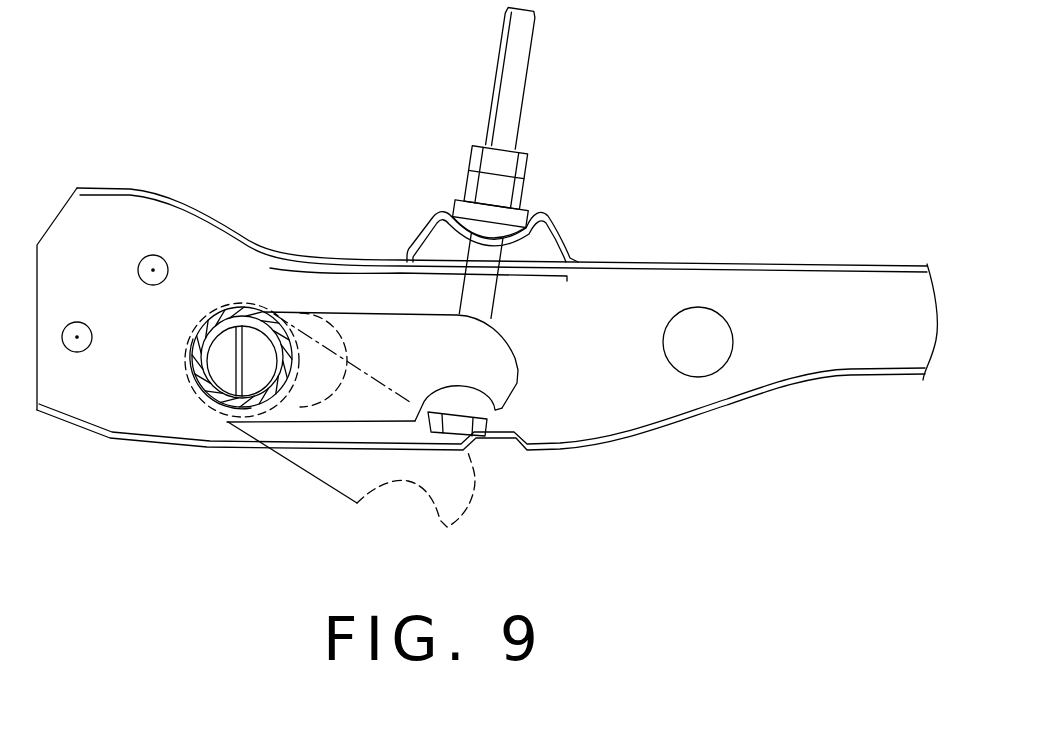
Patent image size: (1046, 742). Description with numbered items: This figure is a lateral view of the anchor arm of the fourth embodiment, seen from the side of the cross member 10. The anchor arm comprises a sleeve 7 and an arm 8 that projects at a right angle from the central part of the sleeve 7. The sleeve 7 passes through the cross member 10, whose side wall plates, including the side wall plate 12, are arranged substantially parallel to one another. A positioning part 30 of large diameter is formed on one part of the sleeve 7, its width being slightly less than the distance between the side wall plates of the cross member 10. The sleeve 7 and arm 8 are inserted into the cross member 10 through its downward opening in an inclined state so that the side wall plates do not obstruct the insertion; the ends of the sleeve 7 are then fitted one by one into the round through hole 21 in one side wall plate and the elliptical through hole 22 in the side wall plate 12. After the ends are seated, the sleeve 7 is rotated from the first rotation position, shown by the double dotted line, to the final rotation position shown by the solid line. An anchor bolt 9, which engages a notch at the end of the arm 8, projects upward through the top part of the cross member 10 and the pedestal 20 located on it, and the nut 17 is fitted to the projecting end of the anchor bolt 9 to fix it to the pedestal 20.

The sleeve 7 is at (203, 393).
The arm 8 is at (507, 395).
The anchor bolt 9 is at (523, 106).
The cross member 10 is at (694, 258).
The side wall plate 12 is at (633, 403).
The nut 17 is at (522, 198).
The pedestal 20 is at (563, 233).
The through hole 21 is at (230, 423).
The through hole 22 is at (288, 408).
The positioning part 30 is at (256, 307).